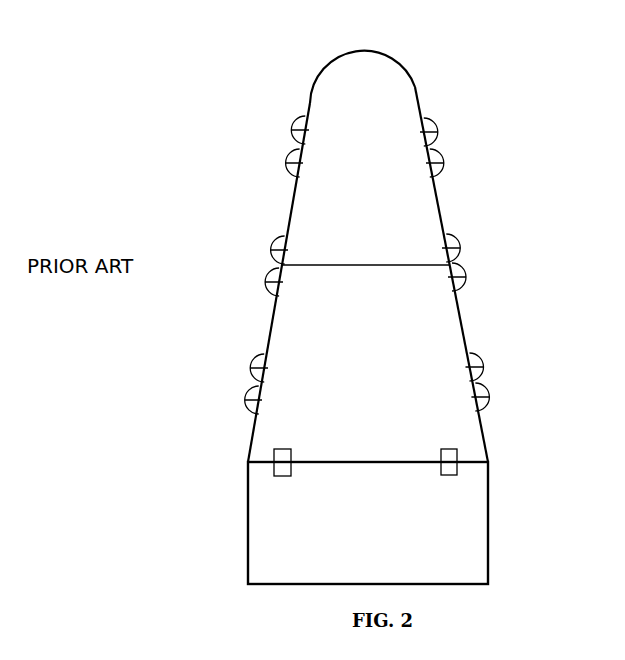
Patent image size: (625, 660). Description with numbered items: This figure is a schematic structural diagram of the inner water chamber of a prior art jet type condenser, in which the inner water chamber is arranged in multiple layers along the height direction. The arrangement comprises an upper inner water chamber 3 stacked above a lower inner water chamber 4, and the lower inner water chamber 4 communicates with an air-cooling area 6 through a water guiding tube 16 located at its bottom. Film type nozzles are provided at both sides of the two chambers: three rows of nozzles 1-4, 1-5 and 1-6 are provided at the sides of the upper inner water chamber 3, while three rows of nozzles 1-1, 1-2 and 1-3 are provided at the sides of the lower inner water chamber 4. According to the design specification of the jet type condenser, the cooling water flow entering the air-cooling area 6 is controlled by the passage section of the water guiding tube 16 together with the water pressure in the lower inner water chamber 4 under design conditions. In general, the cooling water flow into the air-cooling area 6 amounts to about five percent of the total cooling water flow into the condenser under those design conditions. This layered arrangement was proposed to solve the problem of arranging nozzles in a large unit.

The upper inner water chamber 3 is at (353, 147).
The lower inner water chamber 4 is at (323, 382).
The air-cooling area 6 is at (377, 523).
The water guiding tube 16 is at (455, 470).
The row of nozzles 1-1 is at (498, 390).
The row of nozzles 1-2 is at (493, 353).
The row of nozzles 1-3 is at (475, 278).
The row of nozzles 1-4 is at (467, 242).
The row of nozzles 1-5 is at (450, 157).
The row of nozzles 1-6 is at (443, 130).